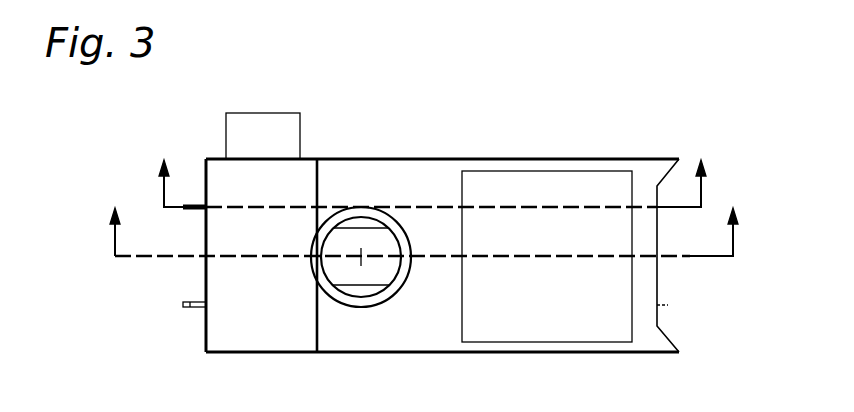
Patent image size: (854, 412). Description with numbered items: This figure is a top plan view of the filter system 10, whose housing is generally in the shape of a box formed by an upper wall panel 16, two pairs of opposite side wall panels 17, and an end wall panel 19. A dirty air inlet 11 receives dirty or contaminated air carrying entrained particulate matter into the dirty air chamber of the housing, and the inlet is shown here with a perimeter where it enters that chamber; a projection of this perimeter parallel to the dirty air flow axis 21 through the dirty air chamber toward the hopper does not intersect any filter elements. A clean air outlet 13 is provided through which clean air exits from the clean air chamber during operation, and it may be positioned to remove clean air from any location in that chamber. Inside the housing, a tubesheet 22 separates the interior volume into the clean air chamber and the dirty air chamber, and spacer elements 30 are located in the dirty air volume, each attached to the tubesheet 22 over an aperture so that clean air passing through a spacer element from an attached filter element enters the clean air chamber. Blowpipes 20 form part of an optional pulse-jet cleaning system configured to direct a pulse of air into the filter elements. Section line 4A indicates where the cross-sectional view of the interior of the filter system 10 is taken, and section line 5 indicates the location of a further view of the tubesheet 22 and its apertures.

The filter system 10 is at (633, 98).
The dirty air inlet 11 is at (400, 213).
The clean air outlet 13 is at (248, 112).
The upper wall panel 16 is at (432, 323).
The side wall panels 17 is at (540, 158).
The end wall panel 19 is at (658, 280).
The blowpipes 20 is at (187, 212).
The dirty air flow axis 21 is at (362, 248).
The tubesheet 22 is at (318, 185).
The spacer elements 30 is at (382, 228).
The section line 5 is at (431, 170).
The section line 4A- 4A is at (421, 220).